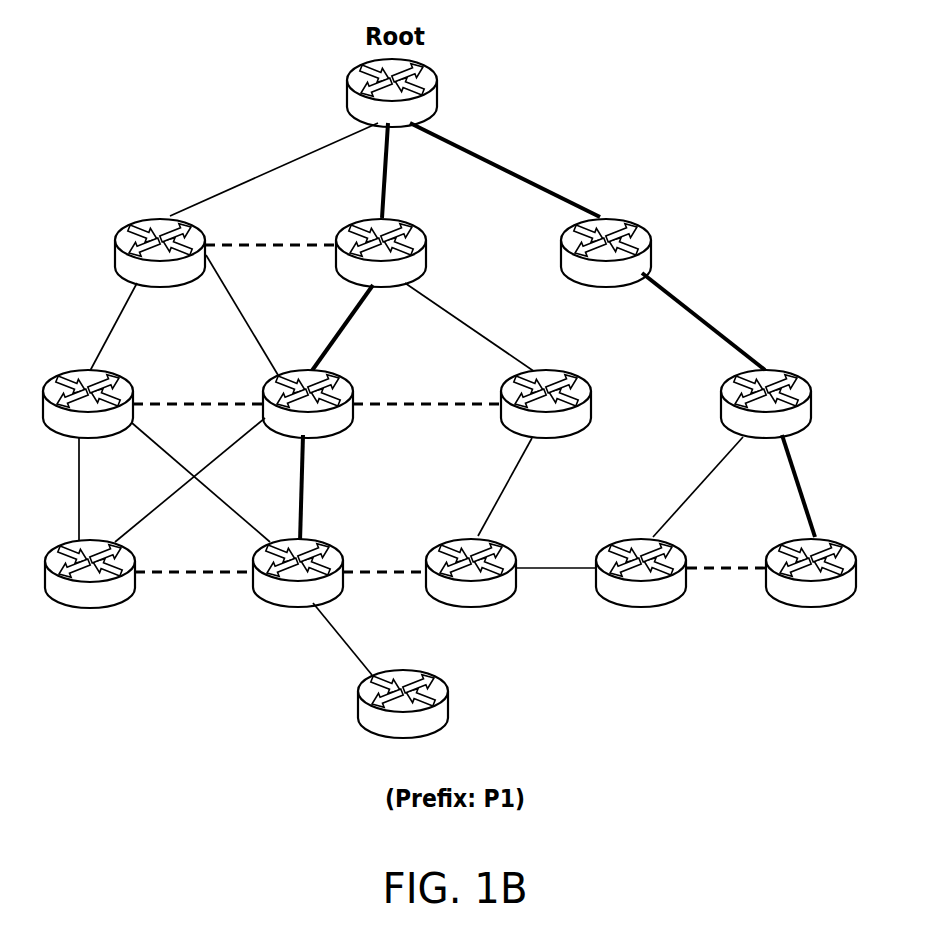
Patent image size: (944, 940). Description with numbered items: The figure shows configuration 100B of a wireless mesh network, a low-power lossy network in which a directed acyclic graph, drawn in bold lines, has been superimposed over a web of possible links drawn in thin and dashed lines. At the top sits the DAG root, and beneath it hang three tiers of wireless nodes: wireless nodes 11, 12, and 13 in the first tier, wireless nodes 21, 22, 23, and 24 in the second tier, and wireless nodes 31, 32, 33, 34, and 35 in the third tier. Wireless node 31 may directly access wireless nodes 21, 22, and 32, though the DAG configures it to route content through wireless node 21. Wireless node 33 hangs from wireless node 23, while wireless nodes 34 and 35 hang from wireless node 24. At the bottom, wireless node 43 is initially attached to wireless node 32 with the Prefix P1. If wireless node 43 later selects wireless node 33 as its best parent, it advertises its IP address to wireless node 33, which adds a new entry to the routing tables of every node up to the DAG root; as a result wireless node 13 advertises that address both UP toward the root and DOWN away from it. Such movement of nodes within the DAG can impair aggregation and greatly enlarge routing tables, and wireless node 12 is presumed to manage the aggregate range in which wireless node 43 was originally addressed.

The configuration 100B is at (253, 55).
The wireless node 11 is at (160, 268).
The wireless node 12 is at (381, 268).
The wireless node 13 is at (606, 268).
The wireless node 21 is at (88, 419).
The wireless node 22 is at (308, 419).
The wireless node 23 is at (546, 419).
The wireless node 24 is at (766, 419).
The wireless node 31 is at (90, 589).
The wireless node 32 is at (298, 588).
The wireless node 33 is at (471, 588).
The wireless node 34 is at (641, 588).
The wireless node 35 is at (811, 588).
The wireless node 43 is at (403, 719).